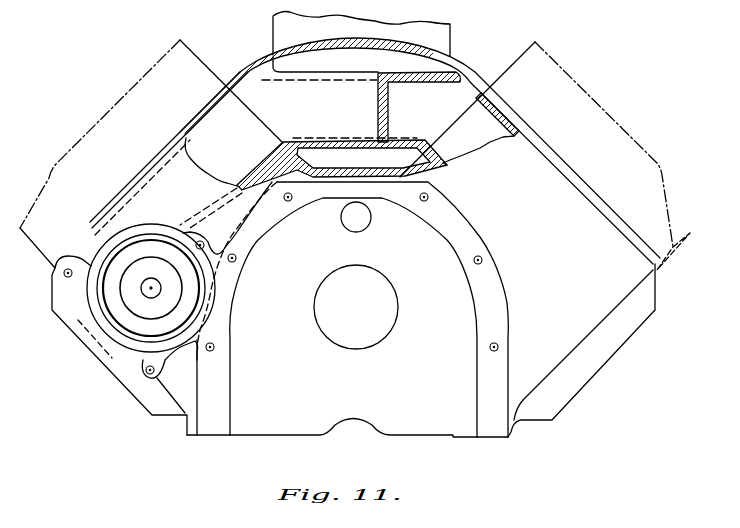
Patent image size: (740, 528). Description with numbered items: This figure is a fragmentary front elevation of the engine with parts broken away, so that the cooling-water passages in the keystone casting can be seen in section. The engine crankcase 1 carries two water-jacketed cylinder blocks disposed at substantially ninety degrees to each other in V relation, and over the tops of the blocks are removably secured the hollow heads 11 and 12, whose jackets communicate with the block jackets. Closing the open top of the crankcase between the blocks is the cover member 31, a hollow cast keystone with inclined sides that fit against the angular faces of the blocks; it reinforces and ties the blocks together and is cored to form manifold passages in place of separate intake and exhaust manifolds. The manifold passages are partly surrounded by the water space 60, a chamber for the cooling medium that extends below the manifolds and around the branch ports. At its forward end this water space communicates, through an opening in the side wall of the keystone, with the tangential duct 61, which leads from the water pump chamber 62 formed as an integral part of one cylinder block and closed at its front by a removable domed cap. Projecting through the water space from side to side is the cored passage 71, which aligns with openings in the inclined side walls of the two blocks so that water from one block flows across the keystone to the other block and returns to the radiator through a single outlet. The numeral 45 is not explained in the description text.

The engine crankcase 1 is at (453, 423).
The hollow head 11 is at (108, 120).
The hollow head 12 is at (640, 160).
The cover member 31 is at (432, 53).
The upper manifold portion 45 is at (287, 31).
The water space 60 is at (320, 65).
The tangential duct 61 is at (349, 163).
The water pump chamber 62 is at (134, 320).
The cored passage 71 is at (419, 107).